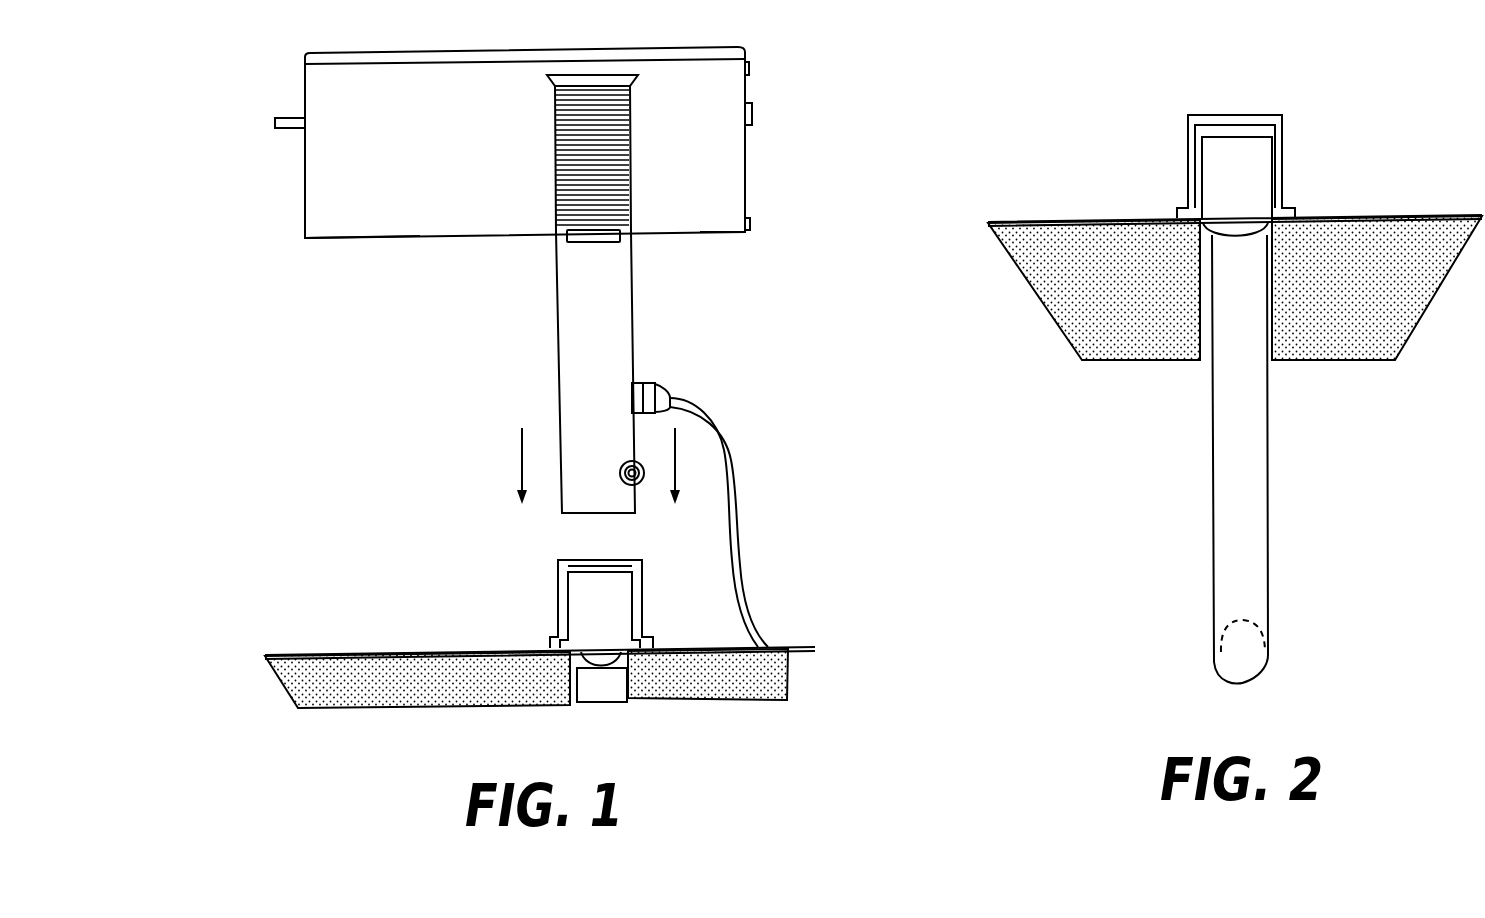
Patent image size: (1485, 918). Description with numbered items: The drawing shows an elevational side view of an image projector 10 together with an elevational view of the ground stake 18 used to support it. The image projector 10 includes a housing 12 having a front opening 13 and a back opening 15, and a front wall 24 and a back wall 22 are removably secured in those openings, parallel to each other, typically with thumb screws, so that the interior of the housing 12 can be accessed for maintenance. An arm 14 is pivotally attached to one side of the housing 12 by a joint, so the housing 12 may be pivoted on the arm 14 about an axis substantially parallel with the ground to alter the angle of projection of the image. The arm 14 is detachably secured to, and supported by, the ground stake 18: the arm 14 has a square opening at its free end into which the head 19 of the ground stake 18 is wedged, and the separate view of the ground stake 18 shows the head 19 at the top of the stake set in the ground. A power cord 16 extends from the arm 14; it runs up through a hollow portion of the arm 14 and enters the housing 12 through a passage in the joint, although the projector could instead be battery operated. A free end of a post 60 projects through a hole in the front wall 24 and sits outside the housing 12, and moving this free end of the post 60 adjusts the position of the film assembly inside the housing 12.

In FIG. 1, the image projector 10 is at (462, 288).
In FIG. 1, the housing 12 is at (713, 218).
In FIG. 1, the front opening 13 is at (266, 251).
In FIG. 1, the arm 14 is at (600, 320).
In FIG. 1, the back opening 15 is at (772, 214).
In FIG. 1, the power cord 16 is at (733, 483).
In FIG. 2, the ground stake 18 is at (1253, 492).
In FIG. 1, the head 19 is at (588, 607).
In FIG. 2, the head 19 is at (1218, 173).
In FIG. 1, the back wall 22 is at (745, 158).
In FIG. 1, the front wall 24 is at (302, 162).
In FIG. 1, the post 60 is at (290, 117).